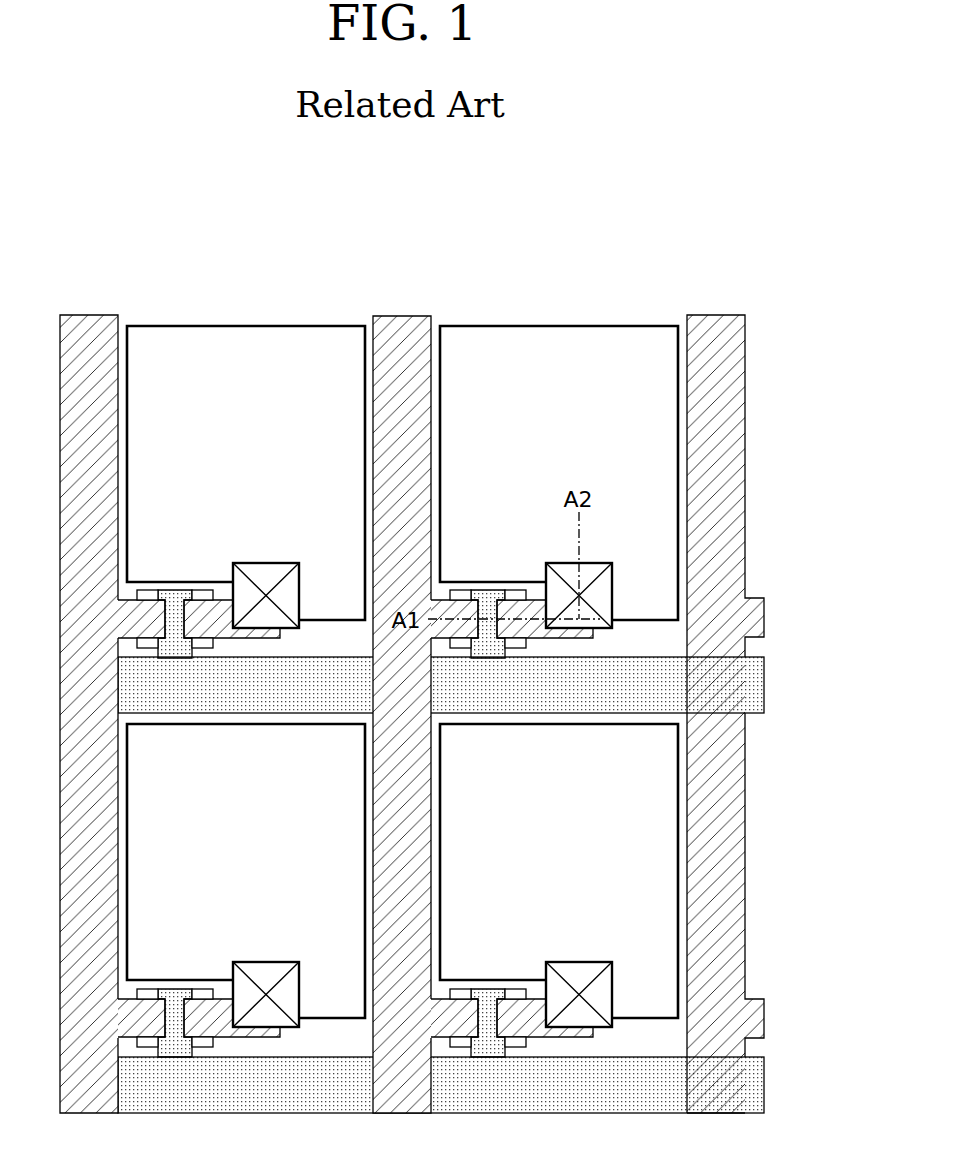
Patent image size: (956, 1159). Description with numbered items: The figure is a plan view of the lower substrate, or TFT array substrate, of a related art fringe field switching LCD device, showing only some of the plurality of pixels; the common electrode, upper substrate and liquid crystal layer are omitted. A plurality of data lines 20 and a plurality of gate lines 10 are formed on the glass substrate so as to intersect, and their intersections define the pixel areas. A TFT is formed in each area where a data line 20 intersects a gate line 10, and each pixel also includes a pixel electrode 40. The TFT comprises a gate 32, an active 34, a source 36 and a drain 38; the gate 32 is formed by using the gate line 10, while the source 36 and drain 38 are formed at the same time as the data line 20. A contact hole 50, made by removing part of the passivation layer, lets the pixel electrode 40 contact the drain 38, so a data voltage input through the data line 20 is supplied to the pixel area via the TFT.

The gate line 10 is at (764, 683).
The data line 20 is at (408, 313).
The gate 32 is at (176, 610).
The active 34 is at (202, 650).
The source 36 is at (150, 613).
The drain 38 is at (203, 612).
The pixel electrode 40 is at (270, 347).
The contact hole 50 is at (270, 563).